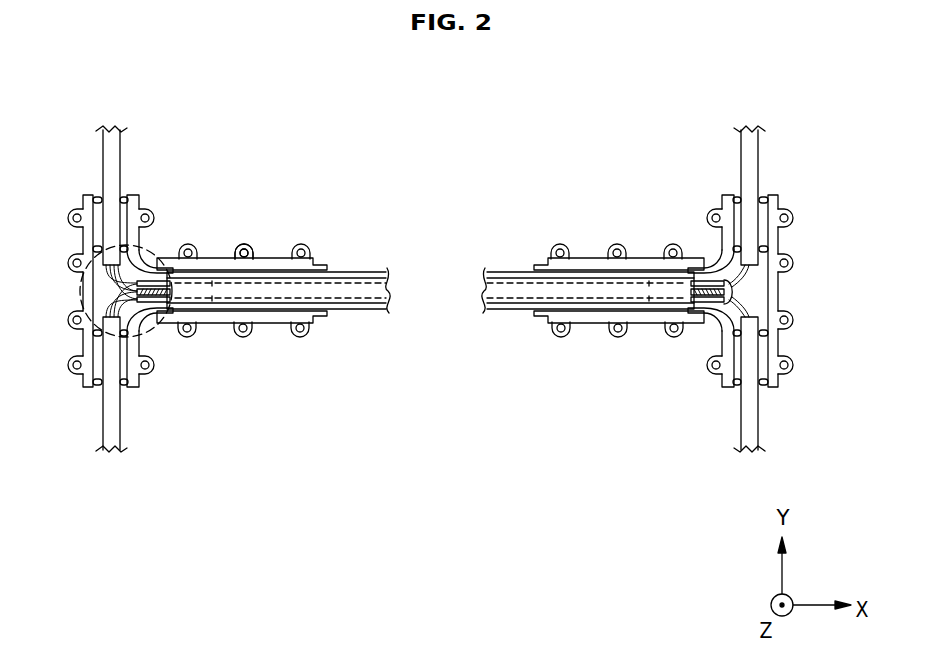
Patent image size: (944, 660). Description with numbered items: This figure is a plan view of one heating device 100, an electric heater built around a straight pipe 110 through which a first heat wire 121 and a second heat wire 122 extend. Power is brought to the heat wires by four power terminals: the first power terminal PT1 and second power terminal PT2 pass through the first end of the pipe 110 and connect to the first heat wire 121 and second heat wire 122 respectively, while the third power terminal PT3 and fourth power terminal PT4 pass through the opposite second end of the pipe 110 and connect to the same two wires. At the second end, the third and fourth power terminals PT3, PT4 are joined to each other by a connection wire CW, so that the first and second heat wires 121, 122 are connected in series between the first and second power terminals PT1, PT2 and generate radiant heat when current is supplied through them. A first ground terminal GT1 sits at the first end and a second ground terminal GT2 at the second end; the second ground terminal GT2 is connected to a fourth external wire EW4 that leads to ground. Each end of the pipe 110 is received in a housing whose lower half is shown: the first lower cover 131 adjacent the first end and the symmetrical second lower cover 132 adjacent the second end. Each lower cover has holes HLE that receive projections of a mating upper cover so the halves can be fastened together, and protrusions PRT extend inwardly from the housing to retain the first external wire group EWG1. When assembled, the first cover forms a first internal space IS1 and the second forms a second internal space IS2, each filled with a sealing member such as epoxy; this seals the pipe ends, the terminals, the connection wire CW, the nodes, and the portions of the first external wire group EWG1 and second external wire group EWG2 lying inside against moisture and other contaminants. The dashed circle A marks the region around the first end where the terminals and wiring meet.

The heating device 100 is at (668, 116).
The pipe 110 is at (352, 271).
The first heat wire 121 is at (378, 282).
The second heat wire 122 is at (364, 305).
The first lower cover 131 is at (216, 256).
The second lower cover 132 is at (578, 257).
The holes HLE is at (254, 241).
The protrusions PRT is at (97, 195).
The first external wire group EWG1 is at (122, 149).
The second external wire group EWG2 is at (760, 148).
The first internal space IS1 is at (92, 234).
The second internal space IS2 is at (771, 233).
The first ground terminal GT1 is at (148, 268).
The second ground terminal GT2 is at (718, 262).
The first power terminal PT1 is at (170, 270).
The second power terminal PT2 is at (163, 320).
The third power terminal PT3 is at (688, 257).
The fourth power terminal PT4 is at (702, 322).
The fourth external wire EW4 is at (786, 263).
The connection wire CW is at (736, 292).
The enlarged region A is at (80, 282).